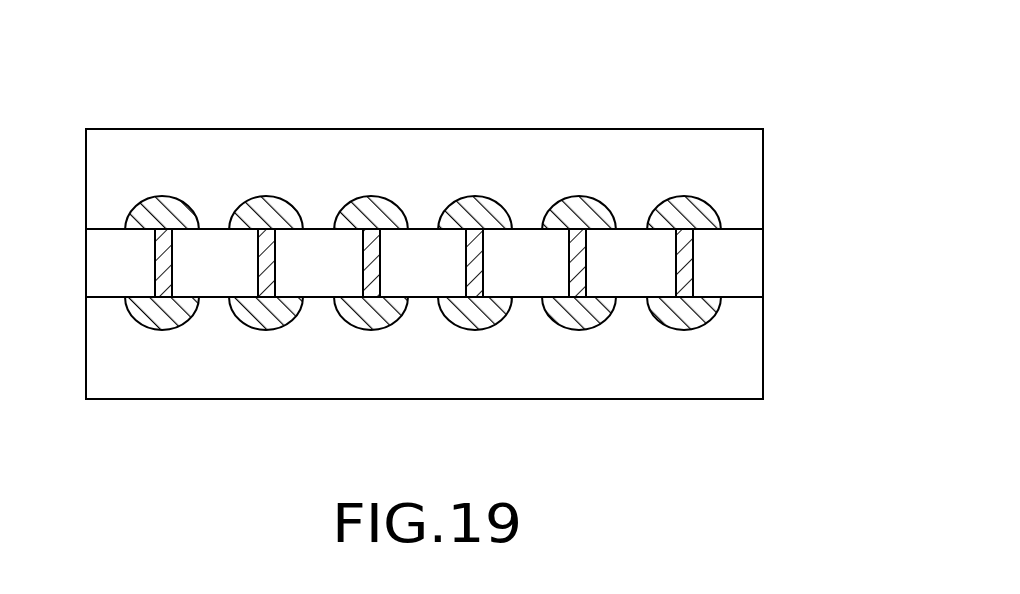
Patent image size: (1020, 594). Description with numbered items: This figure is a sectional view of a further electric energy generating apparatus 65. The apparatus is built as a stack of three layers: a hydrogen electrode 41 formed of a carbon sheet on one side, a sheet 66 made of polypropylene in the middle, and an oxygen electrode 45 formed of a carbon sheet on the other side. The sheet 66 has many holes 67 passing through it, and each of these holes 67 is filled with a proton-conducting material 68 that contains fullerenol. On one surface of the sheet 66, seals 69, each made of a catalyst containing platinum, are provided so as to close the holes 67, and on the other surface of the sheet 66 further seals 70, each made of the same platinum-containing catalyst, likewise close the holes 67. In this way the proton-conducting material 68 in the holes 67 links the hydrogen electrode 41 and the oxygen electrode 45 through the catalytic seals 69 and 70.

The electric energy generating apparatus 65 is at (490, 222).
The hydrogen electrode 41 is at (763, 181).
The sheet 66 is at (763, 256).
The oxygen electrode 45 is at (763, 340).
The seals 69 is at (185, 186).
The seals 70 is at (163, 329).
The holes 67 is at (155, 266).
The proton-conducting material 68 is at (163, 282).